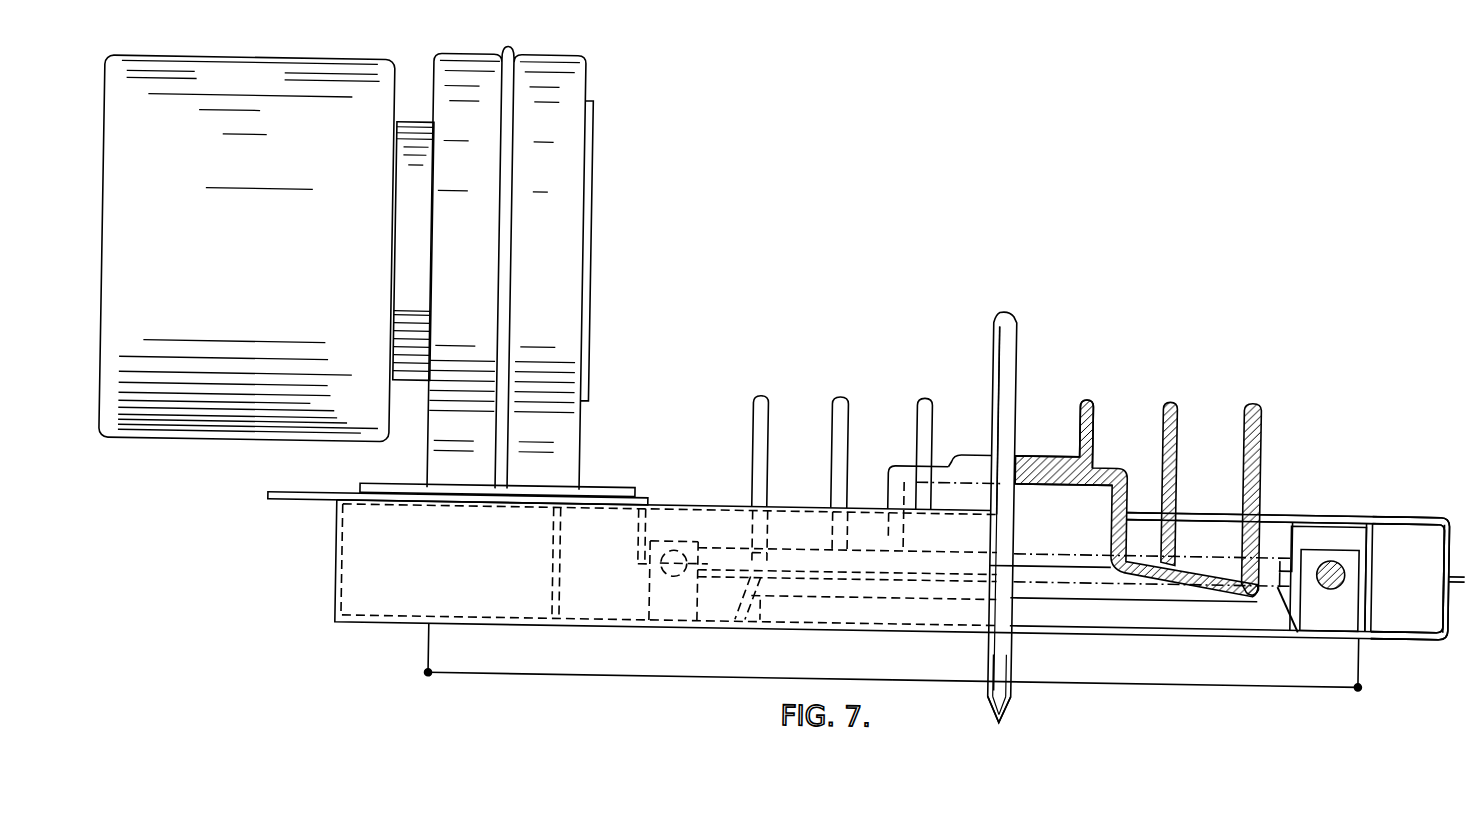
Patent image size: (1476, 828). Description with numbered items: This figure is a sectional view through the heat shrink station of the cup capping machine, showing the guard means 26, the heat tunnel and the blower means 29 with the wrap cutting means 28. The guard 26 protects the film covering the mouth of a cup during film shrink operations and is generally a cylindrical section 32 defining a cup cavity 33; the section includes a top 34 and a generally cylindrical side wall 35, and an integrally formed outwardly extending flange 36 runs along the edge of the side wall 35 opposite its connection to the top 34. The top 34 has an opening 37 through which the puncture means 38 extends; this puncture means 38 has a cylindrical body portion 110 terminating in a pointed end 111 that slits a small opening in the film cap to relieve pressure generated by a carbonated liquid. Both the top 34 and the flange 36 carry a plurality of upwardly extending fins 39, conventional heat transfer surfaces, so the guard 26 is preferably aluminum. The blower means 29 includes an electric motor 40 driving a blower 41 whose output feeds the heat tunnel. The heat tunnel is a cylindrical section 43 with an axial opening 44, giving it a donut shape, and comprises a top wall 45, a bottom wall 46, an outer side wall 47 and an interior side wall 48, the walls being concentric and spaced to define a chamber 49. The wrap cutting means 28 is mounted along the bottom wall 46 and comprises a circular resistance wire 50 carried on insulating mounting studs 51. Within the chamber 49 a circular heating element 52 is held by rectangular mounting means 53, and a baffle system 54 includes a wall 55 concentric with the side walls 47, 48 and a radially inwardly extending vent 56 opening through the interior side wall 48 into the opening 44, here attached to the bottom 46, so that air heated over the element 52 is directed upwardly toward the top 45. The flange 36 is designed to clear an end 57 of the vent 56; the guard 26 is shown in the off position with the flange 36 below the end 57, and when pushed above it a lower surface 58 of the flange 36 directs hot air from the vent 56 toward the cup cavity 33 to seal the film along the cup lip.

The guard means 26 is at (903, 465).
The wrap cutting means 28 is at (1295, 669).
The blower means 29 is at (252, 82).
The cylindrical section 32 is at (1097, 464).
The cup cavity 33 is at (1057, 484).
The top 34 is at (942, 452).
The side wall 35 is at (892, 487).
The flange 36 is at (1186, 545).
The opening 37 is at (1023, 442).
The puncture means 38 is at (1017, 330).
The fins 39 is at (766, 397).
The electric motor 40 is at (220, 256).
The blower 41 is at (560, 112).
The cylindrical section 43 is at (1458, 596).
The axial opening 44 is at (760, 605).
The top wall 45 is at (1386, 497).
The bottom wall 46 is at (1424, 622).
The outer side wall 47 is at (1461, 509).
The interior side wall 48 is at (1292, 522).
The chamber 49 is at (1423, 522).
The resistance wire 50 is at (592, 668).
The mounting studs 51 is at (437, 647).
The heating element 52 is at (1330, 547).
The mounting means 53 is at (1327, 592).
The baffle system 54 is at (1440, 575).
The wall 55 is at (1380, 516).
The vent 56 is at (1286, 572).
The end 57 is at (1263, 579).
The lower surface 58 is at (1210, 571).
The cylindrical body portion 110 is at (1013, 365).
The pointed end 111 is at (1019, 697).